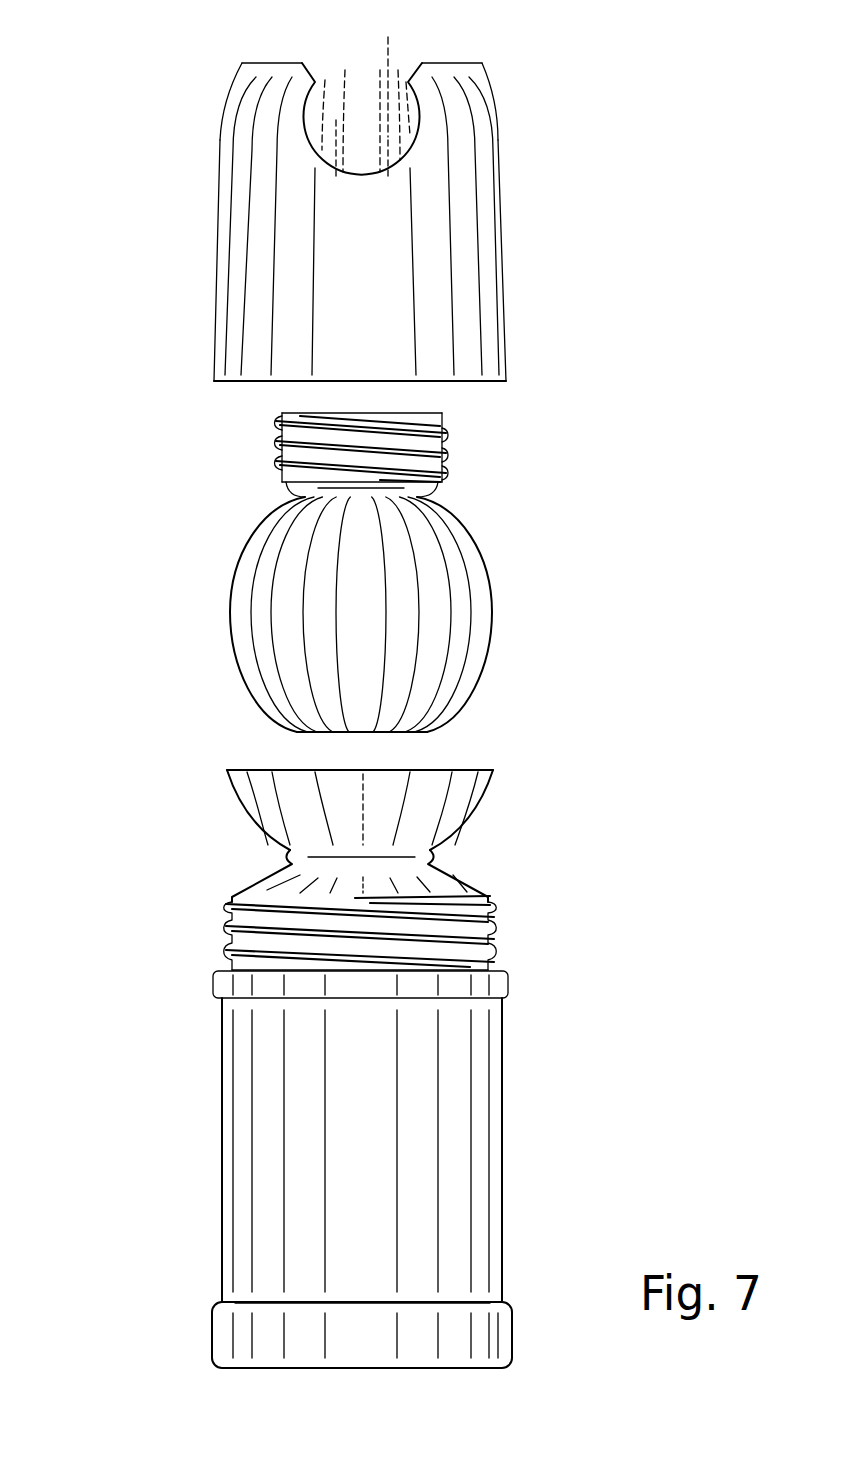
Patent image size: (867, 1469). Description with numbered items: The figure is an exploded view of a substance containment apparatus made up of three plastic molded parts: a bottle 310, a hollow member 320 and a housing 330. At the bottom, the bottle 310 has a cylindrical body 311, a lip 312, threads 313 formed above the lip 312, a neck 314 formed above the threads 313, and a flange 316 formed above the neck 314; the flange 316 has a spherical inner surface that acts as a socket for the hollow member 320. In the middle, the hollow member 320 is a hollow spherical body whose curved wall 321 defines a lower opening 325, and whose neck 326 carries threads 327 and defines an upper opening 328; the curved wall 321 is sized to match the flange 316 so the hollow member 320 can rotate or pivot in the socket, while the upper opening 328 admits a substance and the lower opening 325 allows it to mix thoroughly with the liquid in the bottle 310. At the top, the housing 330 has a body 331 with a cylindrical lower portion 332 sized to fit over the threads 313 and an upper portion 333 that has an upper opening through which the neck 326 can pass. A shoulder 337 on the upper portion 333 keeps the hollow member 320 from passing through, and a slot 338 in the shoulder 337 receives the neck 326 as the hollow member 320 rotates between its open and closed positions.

The bottle 310 is at (595, 1122).
The cylindrical body 311 is at (222, 1112).
The lip 312 is at (212, 980).
The threads 313 is at (223, 927).
The neck 314 is at (443, 851).
The flange 316 is at (487, 795).
The hollow member 320 is at (593, 617).
The curved wall 321 is at (242, 553).
The lower opening 325 is at (322, 735).
The neck 326 is at (440, 482).
The threads 327 is at (444, 436).
The upper opening 328 is at (432, 406).
The housing 330 is at (173, 237).
The body 331 is at (508, 252).
The lower portion 332 is at (255, 381).
The upper portion 333 is at (330, 63).
The shoulder 337 is at (238, 80).
The slot 338 is at (388, 37).